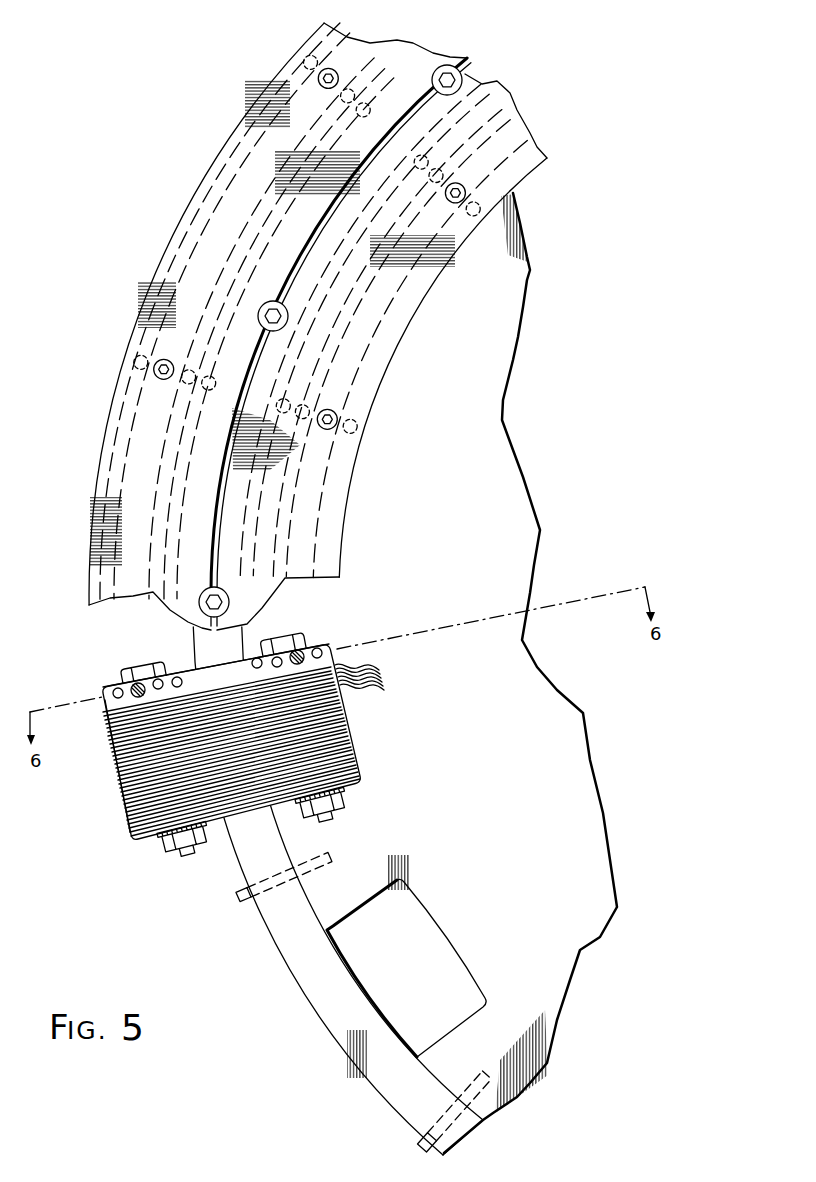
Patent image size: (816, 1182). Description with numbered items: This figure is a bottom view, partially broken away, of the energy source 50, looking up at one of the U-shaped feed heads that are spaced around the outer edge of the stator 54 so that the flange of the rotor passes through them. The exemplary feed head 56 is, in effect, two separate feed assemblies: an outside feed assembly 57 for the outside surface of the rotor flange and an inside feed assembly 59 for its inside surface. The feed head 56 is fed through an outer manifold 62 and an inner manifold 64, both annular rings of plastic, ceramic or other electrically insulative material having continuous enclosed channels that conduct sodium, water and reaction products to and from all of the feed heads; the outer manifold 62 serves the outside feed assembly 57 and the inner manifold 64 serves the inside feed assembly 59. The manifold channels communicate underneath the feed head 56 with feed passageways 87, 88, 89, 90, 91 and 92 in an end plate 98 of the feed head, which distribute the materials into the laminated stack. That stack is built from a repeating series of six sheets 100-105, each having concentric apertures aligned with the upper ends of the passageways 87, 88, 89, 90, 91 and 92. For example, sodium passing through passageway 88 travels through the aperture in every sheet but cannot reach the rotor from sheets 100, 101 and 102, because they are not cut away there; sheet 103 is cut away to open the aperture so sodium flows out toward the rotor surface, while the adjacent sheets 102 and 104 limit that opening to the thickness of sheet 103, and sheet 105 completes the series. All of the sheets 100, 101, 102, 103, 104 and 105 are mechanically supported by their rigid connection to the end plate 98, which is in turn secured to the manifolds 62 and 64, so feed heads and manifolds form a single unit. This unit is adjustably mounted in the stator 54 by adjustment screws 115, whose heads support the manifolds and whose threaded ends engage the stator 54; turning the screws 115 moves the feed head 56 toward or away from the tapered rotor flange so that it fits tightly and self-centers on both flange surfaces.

The energy source 50 is at (311, 326).
The outer manifold 62 is at (150, 286).
The inner manifold 64 is at (424, 301).
The adjustment screws 115 is at (463, 80).
The stator 54 is at (472, 827).
The feed head 56 is at (100, 848).
The outside feed assembly 57 is at (124, 804).
The inside feed assembly 59 is at (266, 729).
The end plate 98 is at (217, 678).
The feed passageway 87 is at (115, 688).
The feed passageway 88 is at (138, 683).
The feed passageway 89 is at (177, 677).
The feed passageway 90 is at (258, 658).
The feed passageway 91 is at (279, 657).
The feed passageway 92 is at (317, 648).
The sheets 100-105 is at (402, 677).
The sheet 100 is at (357, 667).
The sheet 101 is at (358, 671).
The sheet 102 is at (359, 675).
The sheet 103 is at (360, 679).
The sheet 104 is at (361, 683).
The sheet 105 is at (362, 687).